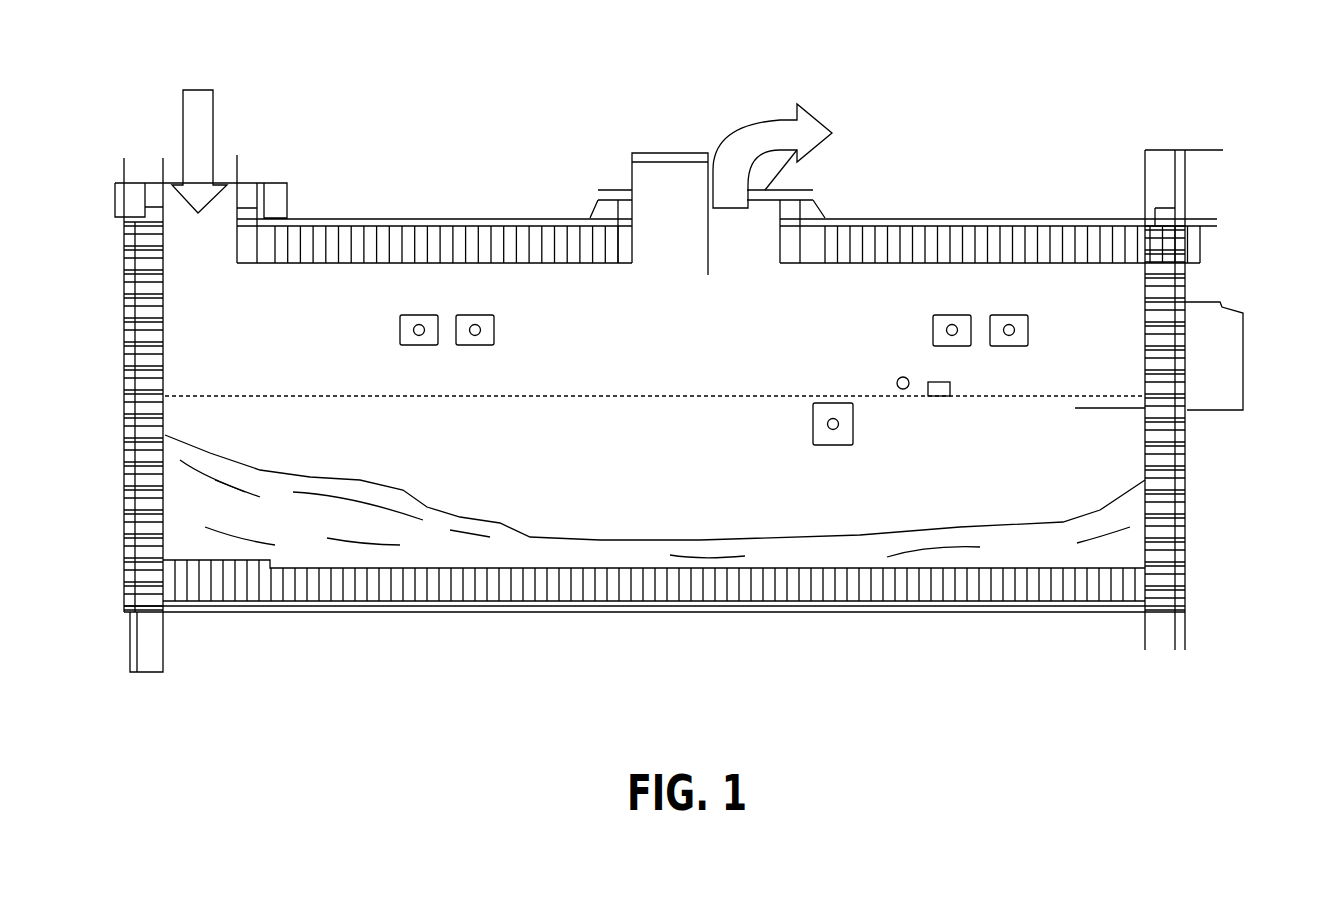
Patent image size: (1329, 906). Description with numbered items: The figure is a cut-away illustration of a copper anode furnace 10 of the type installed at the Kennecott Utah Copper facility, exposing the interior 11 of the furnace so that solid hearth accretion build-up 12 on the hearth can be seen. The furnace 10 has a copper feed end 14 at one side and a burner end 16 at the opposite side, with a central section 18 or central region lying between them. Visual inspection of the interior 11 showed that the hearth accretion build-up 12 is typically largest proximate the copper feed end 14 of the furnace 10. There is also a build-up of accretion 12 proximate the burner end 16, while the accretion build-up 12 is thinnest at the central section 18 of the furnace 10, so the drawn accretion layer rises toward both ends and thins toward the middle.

The copper anode furnace 10 is at (397, 88).
The interior 11 is at (497, 470).
The hearth accretion build-up 12 is at (252, 517).
The copper feed end 14 is at (124, 352).
The burner end 16 is at (1185, 452).
The central section 18 is at (590, 550).